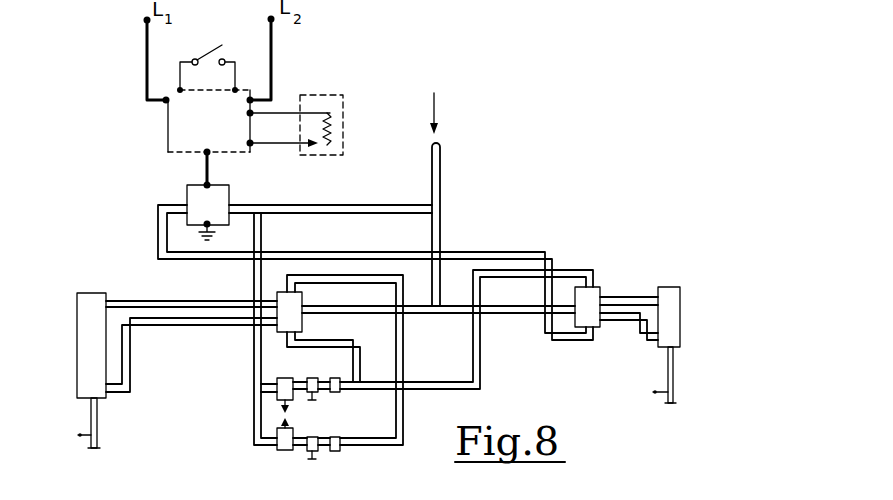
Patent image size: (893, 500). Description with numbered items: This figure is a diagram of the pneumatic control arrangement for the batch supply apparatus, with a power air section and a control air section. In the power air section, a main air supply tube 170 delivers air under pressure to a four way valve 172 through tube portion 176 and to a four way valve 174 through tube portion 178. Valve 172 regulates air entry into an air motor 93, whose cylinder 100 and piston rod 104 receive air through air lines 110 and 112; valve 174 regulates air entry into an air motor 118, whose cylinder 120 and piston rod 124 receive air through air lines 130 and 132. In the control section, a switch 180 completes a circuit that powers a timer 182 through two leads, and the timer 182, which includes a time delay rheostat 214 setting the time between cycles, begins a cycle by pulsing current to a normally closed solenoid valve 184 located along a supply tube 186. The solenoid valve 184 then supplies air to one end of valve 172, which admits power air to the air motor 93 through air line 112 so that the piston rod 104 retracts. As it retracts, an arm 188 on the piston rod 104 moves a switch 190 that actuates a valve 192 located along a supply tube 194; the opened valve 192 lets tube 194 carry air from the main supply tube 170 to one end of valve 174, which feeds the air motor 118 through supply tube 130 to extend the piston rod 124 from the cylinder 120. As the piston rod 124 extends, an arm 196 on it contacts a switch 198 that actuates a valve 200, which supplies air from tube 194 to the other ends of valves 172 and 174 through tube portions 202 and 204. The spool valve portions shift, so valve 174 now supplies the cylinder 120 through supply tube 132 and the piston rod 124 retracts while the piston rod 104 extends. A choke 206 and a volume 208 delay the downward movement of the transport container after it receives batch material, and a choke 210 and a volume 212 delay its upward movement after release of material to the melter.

The air motor 93 is at (683, 283).
The cylinder 100 is at (681, 318).
The piston rod 104 is at (676, 375).
The air line 110 is at (622, 296).
The air line 112 is at (622, 338).
The air motor 118 is at (88, 293).
The cylinder 120 is at (77, 340).
The piston rod 124 is at (91, 410).
The air line 130 is at (183, 300).
The air line 132 is at (140, 326).
The main air supply tube 170 is at (442, 176).
The four way valve 172 is at (630, 248).
The four way valve 174 is at (277, 300).
The tube portion 176 is at (490, 314).
The tube portion 178 is at (413, 314).
The switch 180 is at (208, 52).
The timer 182 is at (168, 118).
The solenoid valve 184 is at (187, 192).
The supply tube 186 is at (158, 228).
The arm 188 is at (660, 392).
The switch 190 is at (282, 424).
The valve 192 is at (277, 450).
The supply tube 194 is at (254, 413).
The arm 196 is at (82, 433).
The switch 198 is at (280, 406).
The valve 200 is at (296, 398).
The tube portion 202 is at (574, 238).
The tube portion 204 is at (318, 340).
The choke 206 is at (305, 455).
The volume 208 is at (332, 450).
The choke 210 is at (333, 377).
The volume 212 is at (310, 376).
The time delay rheostat 214 is at (322, 92).